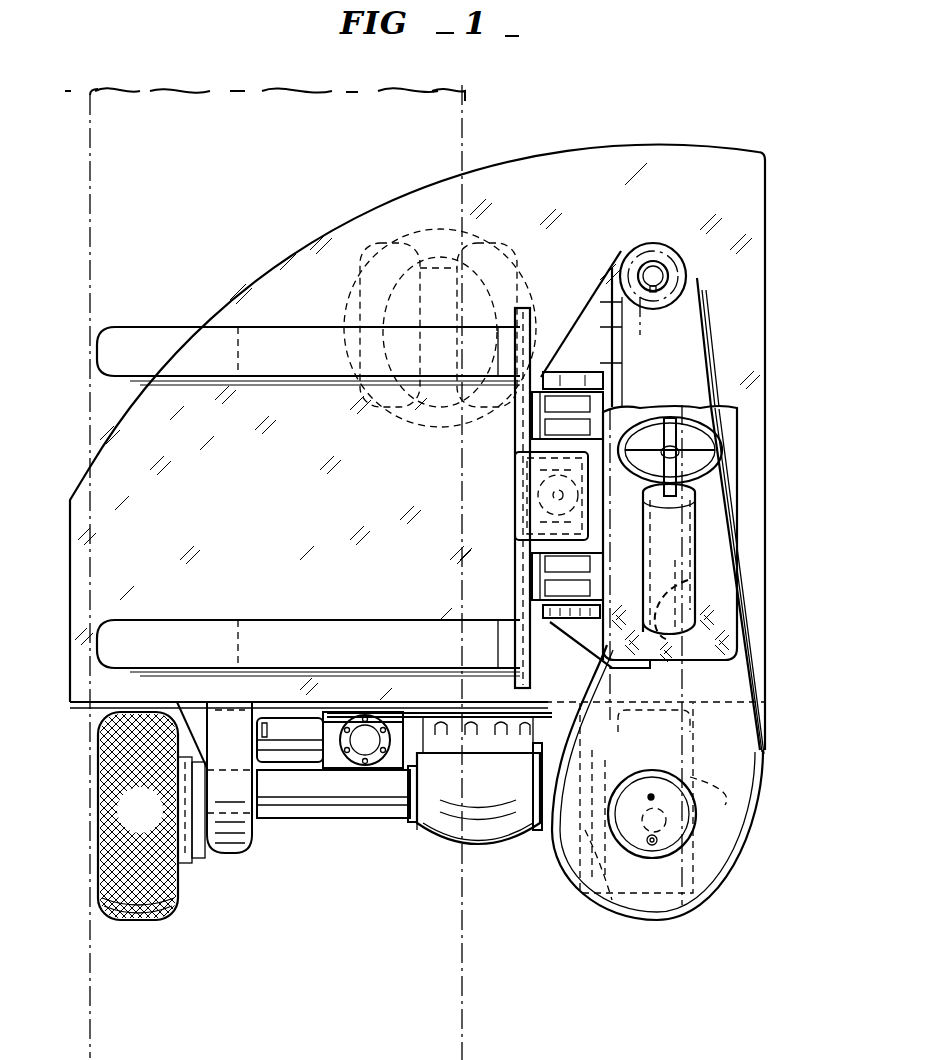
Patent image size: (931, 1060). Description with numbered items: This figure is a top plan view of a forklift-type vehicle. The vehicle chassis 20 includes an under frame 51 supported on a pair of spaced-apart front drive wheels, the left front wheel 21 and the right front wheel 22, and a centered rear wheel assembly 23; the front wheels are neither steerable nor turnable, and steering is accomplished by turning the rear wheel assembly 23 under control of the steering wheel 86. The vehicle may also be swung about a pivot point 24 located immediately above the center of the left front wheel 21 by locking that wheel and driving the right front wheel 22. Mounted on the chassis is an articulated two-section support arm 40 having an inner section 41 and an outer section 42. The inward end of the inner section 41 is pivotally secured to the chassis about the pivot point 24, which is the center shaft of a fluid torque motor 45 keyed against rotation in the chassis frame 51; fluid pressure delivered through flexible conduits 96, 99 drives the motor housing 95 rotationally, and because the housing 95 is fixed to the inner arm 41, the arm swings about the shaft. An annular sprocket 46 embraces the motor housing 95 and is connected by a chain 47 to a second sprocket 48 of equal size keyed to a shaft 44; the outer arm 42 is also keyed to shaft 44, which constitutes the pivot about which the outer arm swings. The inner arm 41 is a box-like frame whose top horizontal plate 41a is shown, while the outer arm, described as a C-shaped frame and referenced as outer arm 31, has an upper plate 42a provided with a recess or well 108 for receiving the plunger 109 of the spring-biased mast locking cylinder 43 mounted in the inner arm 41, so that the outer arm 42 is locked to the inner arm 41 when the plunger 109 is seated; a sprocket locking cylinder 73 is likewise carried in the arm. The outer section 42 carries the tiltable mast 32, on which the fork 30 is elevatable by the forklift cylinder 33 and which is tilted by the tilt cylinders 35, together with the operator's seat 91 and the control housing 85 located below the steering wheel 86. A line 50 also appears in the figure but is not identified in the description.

The vehicle chassis 20 is at (178, 518).
The left front wheel 21 is at (640, 850).
The right front wheel 22 is at (145, 898).
The rear wheel assembly 23 is at (408, 418).
The pivot point 24 is at (602, 892).
The fork 30 is at (308, 501).
The outer arm 31 is at (286, 362).
The mast 32 is at (540, 572).
The forklift cylinder 33 is at (550, 496).
The tilt cylinders 35 is at (600, 455).
The articulated two-section support arm 40 is at (726, 694).
The inner section 41 is at (769, 580).
The top horizontal plate 41a is at (728, 697).
The outer section 42 is at (651, 298).
The upper plate 42a is at (647, 362).
The mast locking cylinder 43 is at (682, 580).
The shaft 44 is at (655, 272).
The fluid torque motor 45 is at (667, 858).
The annular sprocket 46 is at (572, 392).
The chain 47 is at (690, 360).
The second sprocket 48 is at (632, 388).
The ground line 50 is at (128, 1028).
The under frame 51 is at (752, 748).
The sprocket locking cylinder 73 is at (651, 793).
The control housing 85 is at (675, 532).
The steering wheel 86 is at (720, 444).
The seat 91 is at (716, 482).
The motor housing 95 is at (647, 860).
The flexible conduit 96 is at (670, 833).
The flexible conduit 99 is at (656, 793).
The well 108 is at (615, 606).
The plunger 109 is at (683, 638).